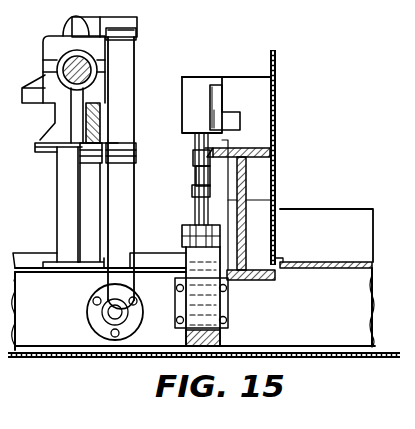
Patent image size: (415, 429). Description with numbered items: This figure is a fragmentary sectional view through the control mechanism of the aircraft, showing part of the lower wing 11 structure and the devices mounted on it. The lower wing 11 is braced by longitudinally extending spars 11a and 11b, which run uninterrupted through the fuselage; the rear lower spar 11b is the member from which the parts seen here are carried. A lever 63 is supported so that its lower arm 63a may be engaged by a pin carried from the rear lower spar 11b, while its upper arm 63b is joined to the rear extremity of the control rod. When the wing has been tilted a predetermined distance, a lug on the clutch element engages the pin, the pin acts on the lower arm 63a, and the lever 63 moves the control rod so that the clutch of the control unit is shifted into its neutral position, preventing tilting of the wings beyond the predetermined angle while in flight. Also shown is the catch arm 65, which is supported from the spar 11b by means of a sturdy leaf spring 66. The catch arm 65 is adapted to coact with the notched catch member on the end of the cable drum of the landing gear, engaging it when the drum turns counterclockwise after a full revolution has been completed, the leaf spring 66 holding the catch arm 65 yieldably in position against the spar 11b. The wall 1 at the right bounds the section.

The frame wall 1 is at (282, 122).
The lower wing 11 is at (330, 235).
The spar 11a is at (10, 226).
The rear lower spar 11b is at (302, 260).
The lever 63 is at (123, 183).
The lower arm 63a is at (112, 262).
The upper arm 63b is at (133, 98).
The catch arm 65 is at (192, 198).
The leaf spring 66 is at (200, 318).